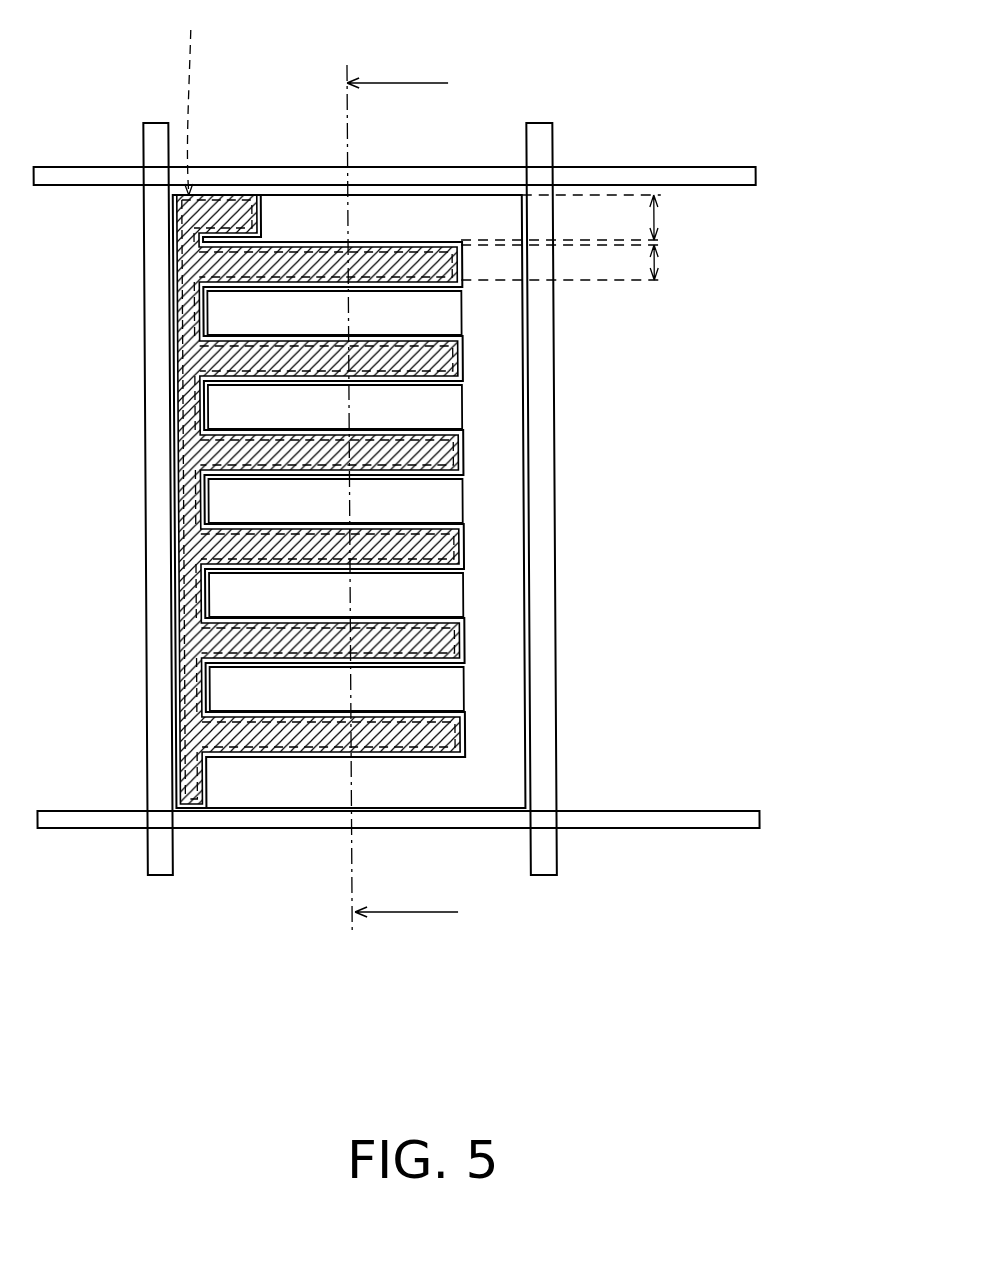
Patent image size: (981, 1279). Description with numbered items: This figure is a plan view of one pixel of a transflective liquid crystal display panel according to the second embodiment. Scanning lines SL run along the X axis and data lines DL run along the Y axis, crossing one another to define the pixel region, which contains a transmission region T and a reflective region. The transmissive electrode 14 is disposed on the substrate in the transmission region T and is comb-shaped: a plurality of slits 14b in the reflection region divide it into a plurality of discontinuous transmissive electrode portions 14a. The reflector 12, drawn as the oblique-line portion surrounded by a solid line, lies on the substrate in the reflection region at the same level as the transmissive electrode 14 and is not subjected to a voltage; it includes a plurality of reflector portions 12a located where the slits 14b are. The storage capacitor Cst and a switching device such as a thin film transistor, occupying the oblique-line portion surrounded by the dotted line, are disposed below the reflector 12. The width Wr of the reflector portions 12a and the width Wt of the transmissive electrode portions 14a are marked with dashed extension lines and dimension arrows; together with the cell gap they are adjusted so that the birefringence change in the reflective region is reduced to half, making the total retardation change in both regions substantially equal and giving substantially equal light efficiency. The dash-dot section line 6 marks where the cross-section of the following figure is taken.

The data line DL is at (157, 123).
The scanning line SL is at (757, 176).
The transmission region T is at (190, 97).
The reflector 12 is at (205, 357).
The reflector portion 12a is at (231, 355).
The storage capacitor Cst is at (182, 455).
The transmissive electrode 14 is at (500, 497).
The transmissive electrode portion 14a is at (400, 500).
The slit 14b is at (453, 286).
The width of the transmissive electrode portions Wt is at (581, 217).
The width of the reflector portions Wr is at (581, 263).
The section line 6- 6 is at (402, 492).